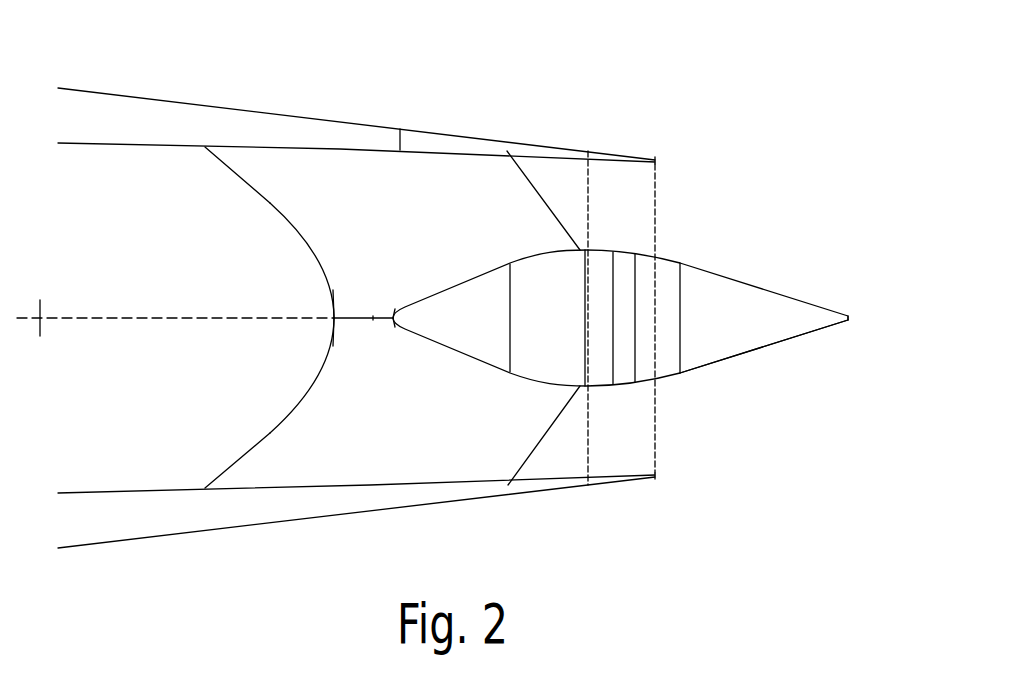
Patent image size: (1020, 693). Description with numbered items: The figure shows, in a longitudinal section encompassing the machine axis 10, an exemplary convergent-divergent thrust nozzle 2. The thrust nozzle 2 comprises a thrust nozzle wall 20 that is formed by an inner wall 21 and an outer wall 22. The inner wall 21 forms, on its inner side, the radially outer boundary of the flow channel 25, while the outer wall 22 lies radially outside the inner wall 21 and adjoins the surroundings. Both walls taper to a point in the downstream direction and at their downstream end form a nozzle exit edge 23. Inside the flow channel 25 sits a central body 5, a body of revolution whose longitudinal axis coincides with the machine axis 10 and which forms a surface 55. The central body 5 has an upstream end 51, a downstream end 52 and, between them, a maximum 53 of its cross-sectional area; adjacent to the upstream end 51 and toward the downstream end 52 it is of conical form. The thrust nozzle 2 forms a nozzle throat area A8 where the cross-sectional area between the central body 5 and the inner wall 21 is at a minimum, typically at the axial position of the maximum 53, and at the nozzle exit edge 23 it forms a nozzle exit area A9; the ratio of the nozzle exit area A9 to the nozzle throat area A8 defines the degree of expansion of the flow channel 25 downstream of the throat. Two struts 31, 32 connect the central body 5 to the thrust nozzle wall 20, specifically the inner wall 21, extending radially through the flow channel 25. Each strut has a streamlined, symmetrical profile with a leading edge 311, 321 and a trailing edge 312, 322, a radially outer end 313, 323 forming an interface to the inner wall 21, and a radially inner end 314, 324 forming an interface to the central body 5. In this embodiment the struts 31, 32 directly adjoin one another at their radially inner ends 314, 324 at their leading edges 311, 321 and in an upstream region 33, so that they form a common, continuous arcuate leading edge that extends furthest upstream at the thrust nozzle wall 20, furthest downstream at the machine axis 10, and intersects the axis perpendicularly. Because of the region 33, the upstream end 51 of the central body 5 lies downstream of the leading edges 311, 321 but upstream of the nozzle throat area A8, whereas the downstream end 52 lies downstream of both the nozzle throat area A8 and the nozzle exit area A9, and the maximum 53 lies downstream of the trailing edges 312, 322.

The thrust nozzle 2 is at (481, 104).
The thrust nozzle wall 20 is at (236, 104).
The outer wall 22 is at (127, 88).
The inner wall 21 is at (115, 147).
The nozzle exit edge 23 is at (658, 160).
The radially outer end of strut 313 is at (388, 148).
The radially outer end of strut 323 is at (379, 491).
The strut 31 is at (280, 198).
The leading edge 311 is at (240, 185).
The trailing edge 312 is at (546, 206).
The strut 32 is at (287, 425).
The leading edge 321 is at (248, 450).
The trailing edge 322 is at (545, 428).
The upstream region 33 is at (348, 303).
The radially inner end of strut 314 is at (348, 325).
The radially inner end of strut 324 is at (374, 312).
The nozzle throat area A8 is at (589, 197).
The nozzle exit area A9 is at (657, 215).
The machine axis 10 is at (83, 317).
The flow channel 25 is at (76, 263).
The central body 5 is at (757, 300).
The upstream end 51 is at (393, 327).
The downstream end 52 is at (852, 318).
The maximum of cross-sectional area 53 is at (588, 249).
The surface 55 is at (716, 364).